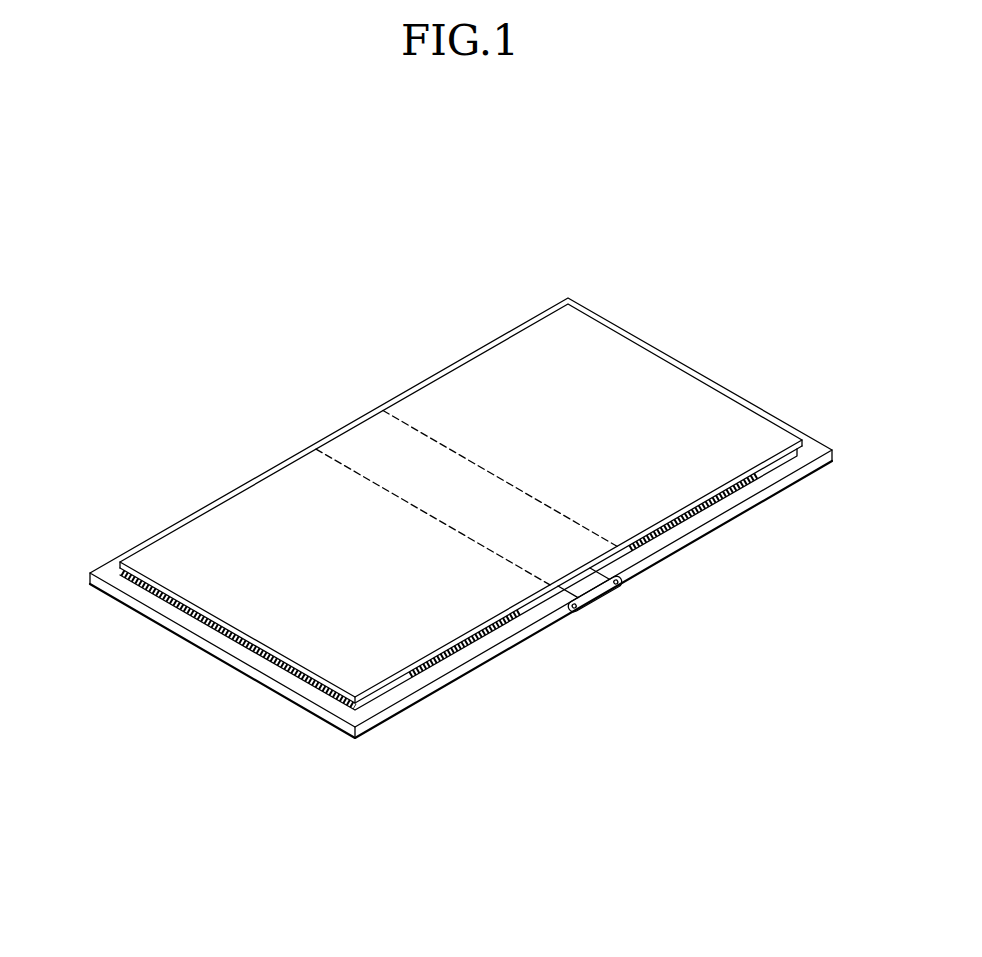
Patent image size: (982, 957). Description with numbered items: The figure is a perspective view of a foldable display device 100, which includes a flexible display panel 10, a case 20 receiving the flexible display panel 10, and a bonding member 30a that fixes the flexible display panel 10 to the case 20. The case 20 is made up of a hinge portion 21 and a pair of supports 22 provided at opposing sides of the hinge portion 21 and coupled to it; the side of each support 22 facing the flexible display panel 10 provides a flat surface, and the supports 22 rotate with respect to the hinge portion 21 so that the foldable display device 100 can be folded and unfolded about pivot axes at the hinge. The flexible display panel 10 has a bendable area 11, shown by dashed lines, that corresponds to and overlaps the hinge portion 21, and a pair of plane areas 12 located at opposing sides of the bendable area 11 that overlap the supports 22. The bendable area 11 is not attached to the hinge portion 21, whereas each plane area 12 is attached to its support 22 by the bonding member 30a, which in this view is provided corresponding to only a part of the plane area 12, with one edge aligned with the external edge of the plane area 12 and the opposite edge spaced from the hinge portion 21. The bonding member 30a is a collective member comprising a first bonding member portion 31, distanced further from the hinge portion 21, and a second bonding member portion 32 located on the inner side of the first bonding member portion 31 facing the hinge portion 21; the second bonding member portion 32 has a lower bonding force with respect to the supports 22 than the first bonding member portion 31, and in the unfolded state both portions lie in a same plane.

The foldable display device 100 is at (426, 297).
The flexible display panel 10 is at (338, 341).
The bendable area 11 is at (342, 443).
The plane area 12 is at (297, 470).
The case 20 is at (584, 696).
The hinge portion 21 is at (600, 592).
The support 22 is at (652, 562).
The bonding member 30a is at (810, 536).
The first bonding member portion 31 is at (778, 464).
The second bonding member portion 32 is at (727, 494).